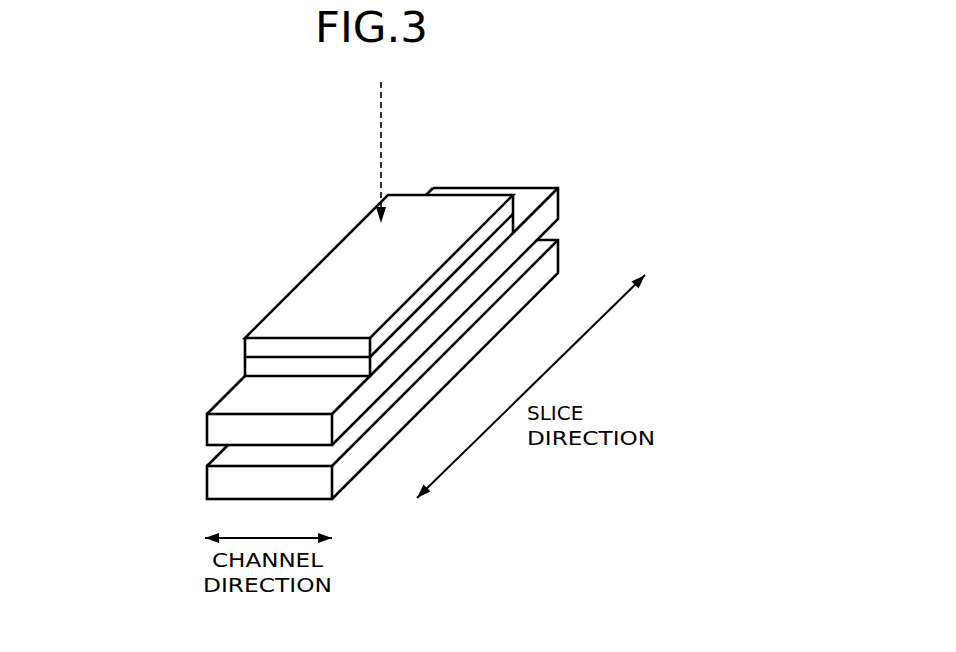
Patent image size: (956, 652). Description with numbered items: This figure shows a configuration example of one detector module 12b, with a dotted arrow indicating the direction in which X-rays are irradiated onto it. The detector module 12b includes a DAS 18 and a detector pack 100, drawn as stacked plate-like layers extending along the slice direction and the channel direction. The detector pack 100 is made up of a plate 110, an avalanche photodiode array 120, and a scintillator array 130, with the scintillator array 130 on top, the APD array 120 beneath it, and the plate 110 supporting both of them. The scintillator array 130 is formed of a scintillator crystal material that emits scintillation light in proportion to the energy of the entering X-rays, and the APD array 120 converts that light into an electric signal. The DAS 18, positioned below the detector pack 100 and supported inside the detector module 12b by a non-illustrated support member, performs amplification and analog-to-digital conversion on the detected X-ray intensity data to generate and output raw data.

The detector module 12b is at (523, 131).
The detector pack 100 is at (132, 315).
The scintillator array 130 is at (245, 347).
The avalanche photodiode (APD) array 120 is at (245, 366).
The plate 110 is at (206, 427).
The DAS 18 is at (206, 481).